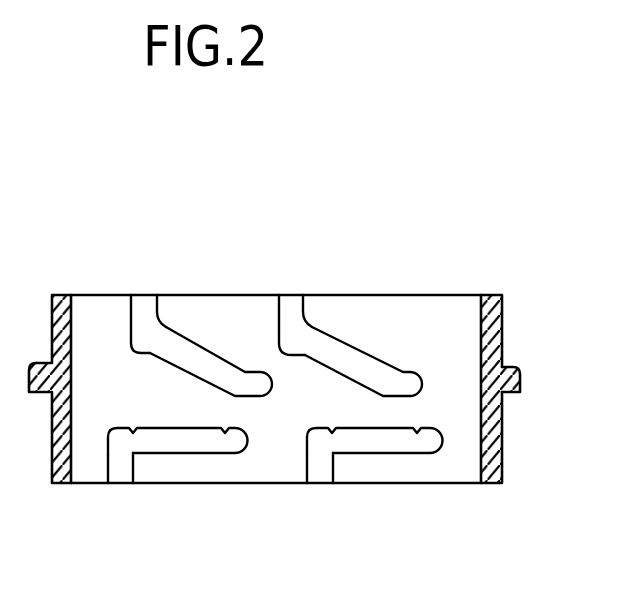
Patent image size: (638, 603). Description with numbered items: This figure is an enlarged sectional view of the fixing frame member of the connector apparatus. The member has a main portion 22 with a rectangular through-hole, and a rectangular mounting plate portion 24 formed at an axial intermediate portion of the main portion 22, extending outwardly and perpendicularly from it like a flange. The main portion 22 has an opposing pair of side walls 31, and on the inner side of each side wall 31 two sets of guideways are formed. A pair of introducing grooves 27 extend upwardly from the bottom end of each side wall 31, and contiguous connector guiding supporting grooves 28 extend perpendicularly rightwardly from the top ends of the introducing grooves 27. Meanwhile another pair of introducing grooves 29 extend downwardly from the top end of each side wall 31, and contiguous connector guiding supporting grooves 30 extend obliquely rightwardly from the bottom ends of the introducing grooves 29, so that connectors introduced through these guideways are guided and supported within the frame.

The main portion 22 is at (502, 307).
The mounting plate portion 24 is at (520, 368).
The introducing grooves 27 is at (313, 475).
The connector guiding supporting grooves 28 is at (363, 443).
The introducing grooves 29 is at (276, 313).
The connector guiding supporting grooves 30 is at (337, 362).
The side walls 31 is at (407, 305).